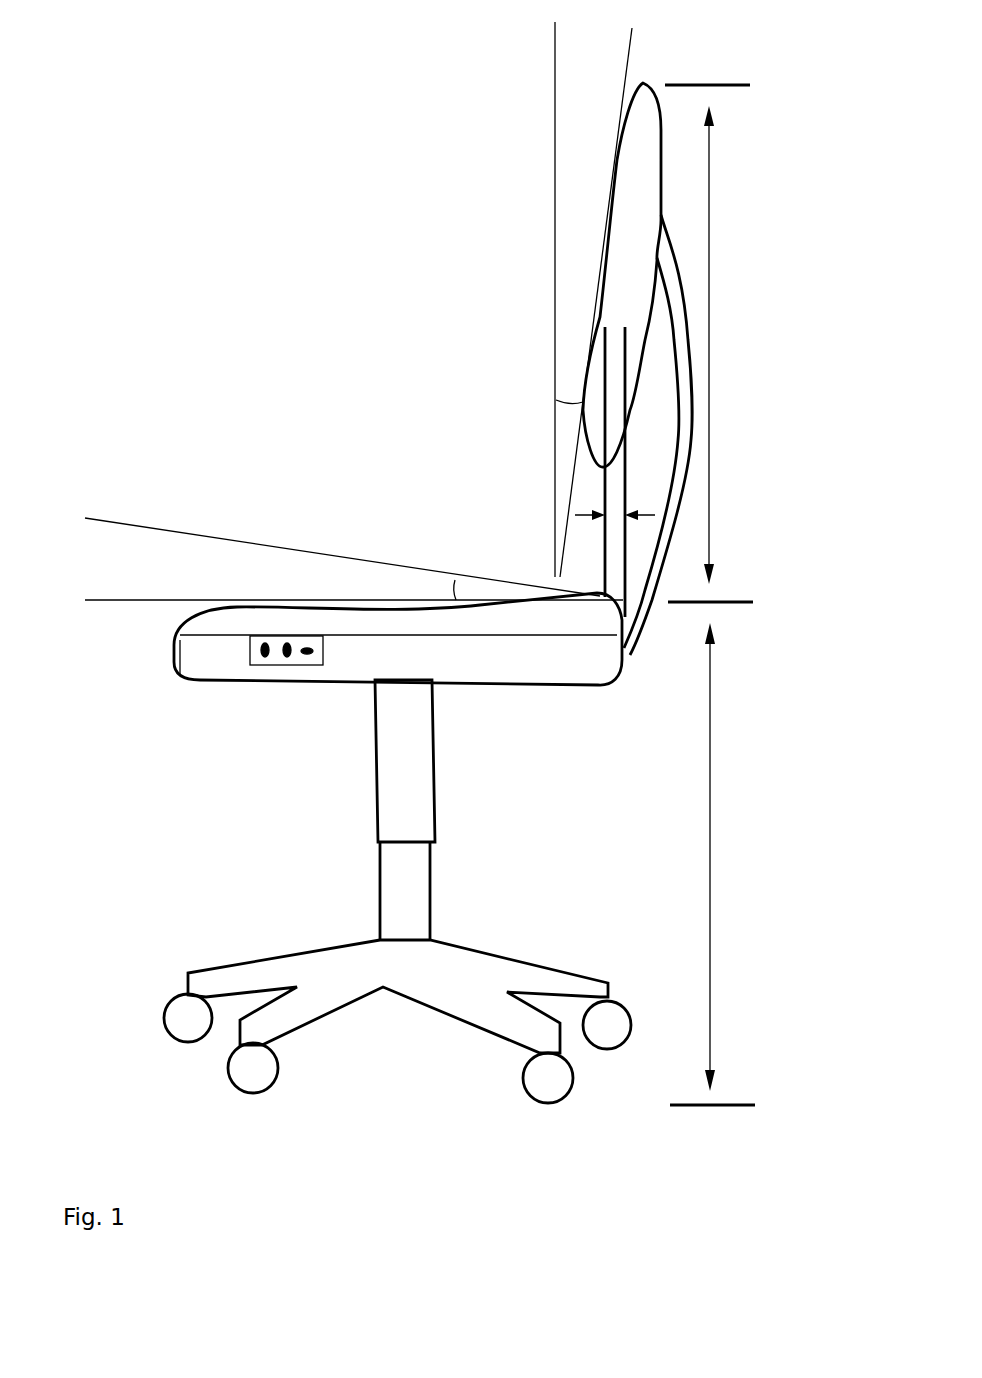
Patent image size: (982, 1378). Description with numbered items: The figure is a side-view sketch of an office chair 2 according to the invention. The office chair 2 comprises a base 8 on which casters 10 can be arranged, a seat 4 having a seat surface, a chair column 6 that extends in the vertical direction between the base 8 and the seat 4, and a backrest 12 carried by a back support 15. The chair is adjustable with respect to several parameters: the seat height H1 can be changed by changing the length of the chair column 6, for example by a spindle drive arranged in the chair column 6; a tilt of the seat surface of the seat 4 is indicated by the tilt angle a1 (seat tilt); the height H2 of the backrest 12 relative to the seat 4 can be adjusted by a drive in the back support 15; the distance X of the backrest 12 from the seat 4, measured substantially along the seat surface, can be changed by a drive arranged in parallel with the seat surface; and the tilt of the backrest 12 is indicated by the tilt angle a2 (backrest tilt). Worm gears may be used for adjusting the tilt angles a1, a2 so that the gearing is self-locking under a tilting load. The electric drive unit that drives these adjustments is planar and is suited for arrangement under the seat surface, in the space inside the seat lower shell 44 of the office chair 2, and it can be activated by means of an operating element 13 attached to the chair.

The office chair 2 is at (365, 307).
The seat 4 is at (342, 627).
The chair column 6 is at (420, 793).
The base 8 is at (347, 990).
The casters 10 is at (262, 1078).
The backrest 12 is at (640, 96).
The operating element 13 is at (300, 653).
The back support 15 is at (690, 442).
The seat lower shell 44 is at (223, 653).
The tilt angle (seat tilt) a1 is at (354, 559).
The tilt angle (backrest tilt) a2 is at (593, 299).
The distance X is at (615, 472).
The seat height H1 is at (703, 864).
The backrest height H2 is at (730, 343).